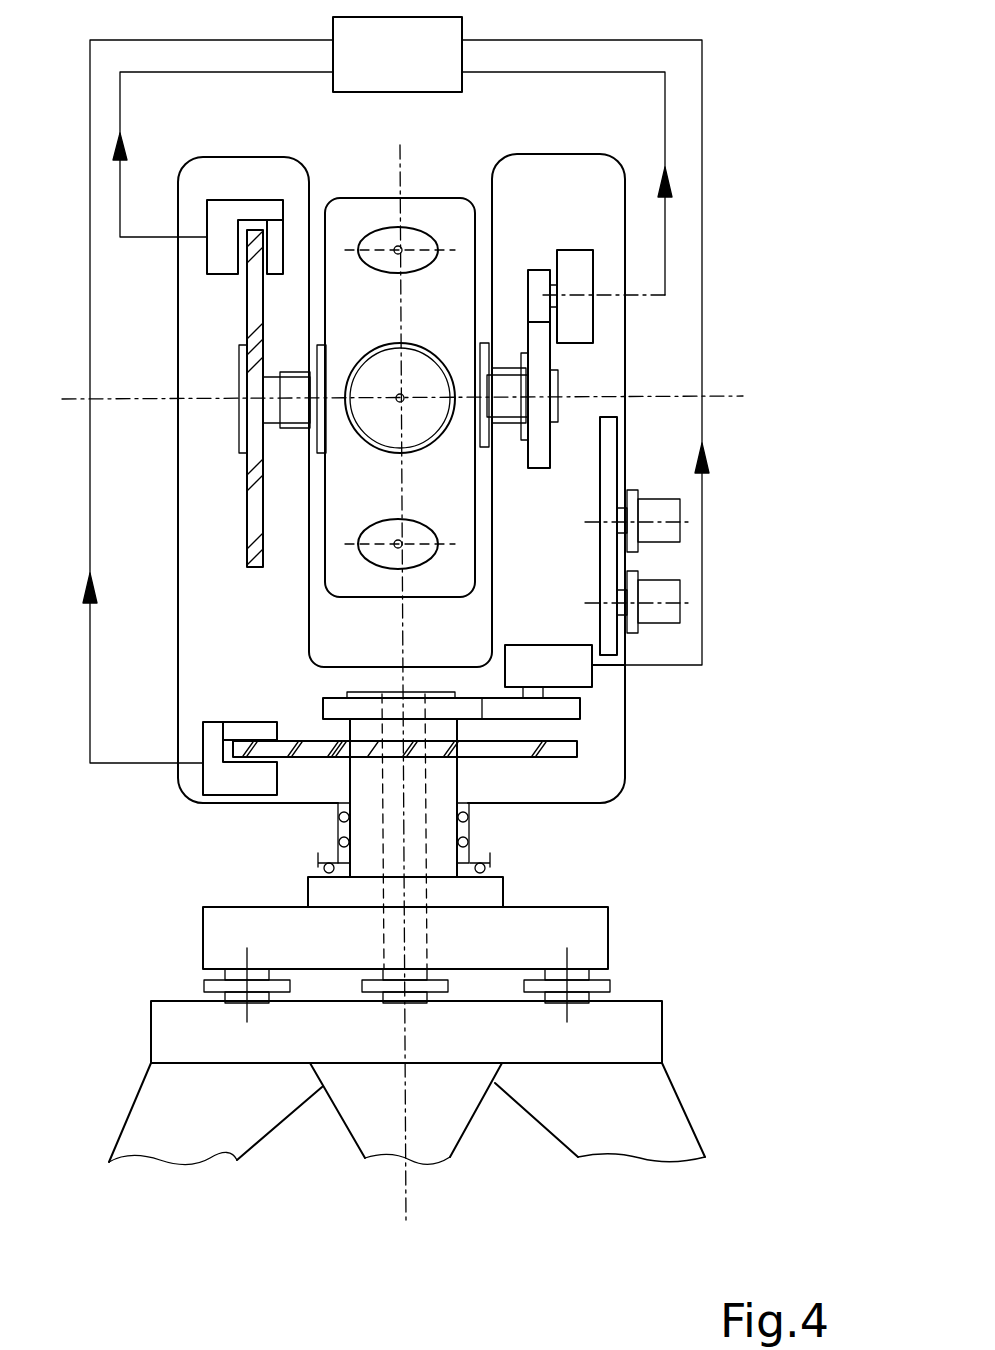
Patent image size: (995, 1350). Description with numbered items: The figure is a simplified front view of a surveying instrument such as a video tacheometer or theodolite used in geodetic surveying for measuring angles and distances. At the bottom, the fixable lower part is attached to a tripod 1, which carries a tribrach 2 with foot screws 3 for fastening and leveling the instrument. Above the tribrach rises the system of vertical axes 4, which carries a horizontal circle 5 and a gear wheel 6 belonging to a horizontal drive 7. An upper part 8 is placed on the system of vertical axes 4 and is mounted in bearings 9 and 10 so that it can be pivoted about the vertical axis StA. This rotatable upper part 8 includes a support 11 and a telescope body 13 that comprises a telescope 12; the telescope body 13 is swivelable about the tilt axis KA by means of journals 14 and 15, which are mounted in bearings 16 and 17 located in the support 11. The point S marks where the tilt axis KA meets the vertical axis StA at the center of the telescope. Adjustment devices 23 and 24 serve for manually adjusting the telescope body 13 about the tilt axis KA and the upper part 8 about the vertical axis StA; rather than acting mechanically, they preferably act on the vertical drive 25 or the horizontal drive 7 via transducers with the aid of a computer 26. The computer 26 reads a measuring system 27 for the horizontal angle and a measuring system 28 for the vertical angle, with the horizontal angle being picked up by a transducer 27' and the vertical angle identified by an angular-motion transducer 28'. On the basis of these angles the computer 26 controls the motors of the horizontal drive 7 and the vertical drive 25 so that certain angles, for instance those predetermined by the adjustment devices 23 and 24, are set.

The tripod 1 is at (687, 1123).
The tribrach 2 is at (603, 937).
The foot screws 3 is at (607, 982).
The system of vertical axes 4 is at (367, 834).
The horizontal circle 5 is at (577, 745).
The gear wheel 6 is at (323, 712).
The horizontal drive 7 is at (533, 655).
The upper part 8 is at (628, 700).
The bearing 9 is at (468, 843).
The bearing 10 is at (318, 872).
The support 11 is at (523, 167).
The telescope 12 is at (417, 368).
The telescope body 13 is at (430, 197).
The journal 14 is at (278, 442).
The journal 15 is at (508, 412).
The bearing 16 is at (278, 360).
The bearing 17 is at (508, 367).
The adjustment device 23 is at (673, 535).
The adjustment device 24 is at (673, 616).
The vertical drive 25 is at (572, 260).
The computer 26 is at (396, 390).
The measuring system for the horizontal angle 27 is at (186, 783).
The transducer 27' is at (236, 694).
The measuring system for the vertical angle 28 is at (197, 263).
The angular-motion transducer 28' is at (271, 189).
The tilt axis KA is at (723, 394).
The intersection point S is at (403, 403).
The vertical axis StA is at (406, 1216).